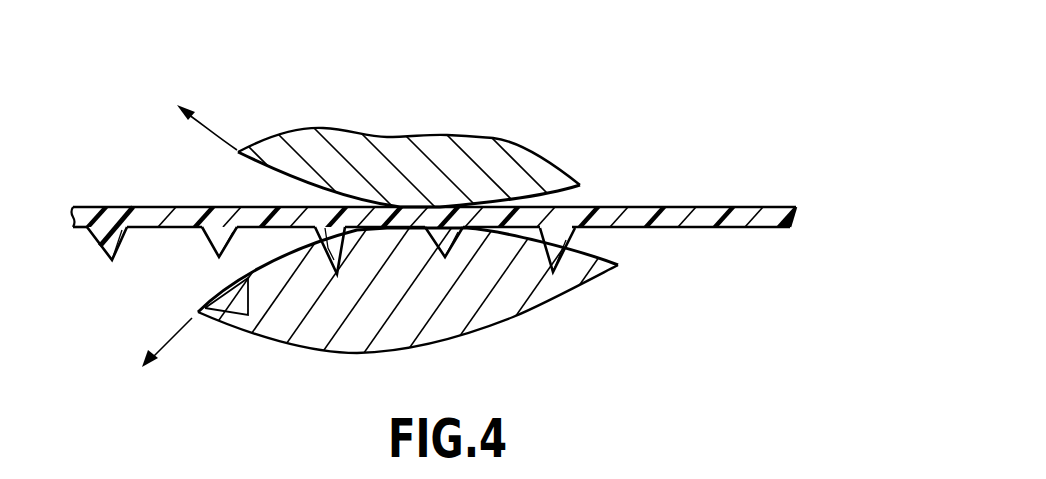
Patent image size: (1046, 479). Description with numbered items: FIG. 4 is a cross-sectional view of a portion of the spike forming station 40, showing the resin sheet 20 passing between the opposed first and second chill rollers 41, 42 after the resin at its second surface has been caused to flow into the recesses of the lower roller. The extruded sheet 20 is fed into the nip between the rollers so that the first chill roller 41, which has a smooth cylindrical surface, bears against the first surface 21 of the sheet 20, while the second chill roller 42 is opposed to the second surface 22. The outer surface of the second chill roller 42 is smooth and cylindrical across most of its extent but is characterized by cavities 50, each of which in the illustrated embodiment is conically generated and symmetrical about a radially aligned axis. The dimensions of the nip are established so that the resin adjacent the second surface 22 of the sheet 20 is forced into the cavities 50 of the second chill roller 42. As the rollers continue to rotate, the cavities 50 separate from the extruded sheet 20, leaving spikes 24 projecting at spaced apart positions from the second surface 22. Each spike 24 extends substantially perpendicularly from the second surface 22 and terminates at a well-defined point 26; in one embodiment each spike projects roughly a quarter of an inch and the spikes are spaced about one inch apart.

The resin sheet 20 is at (462, 229).
The first surface 21 is at (765, 207).
The second surface 22 is at (765, 230).
The spikes 24 is at (97, 242).
The point 26 is at (114, 262).
The spike forming station 40 is at (408, 124).
The first chill roller 41 is at (567, 198).
The second chill roller 42 is at (434, 299).
The cavities 50 is at (223, 315).